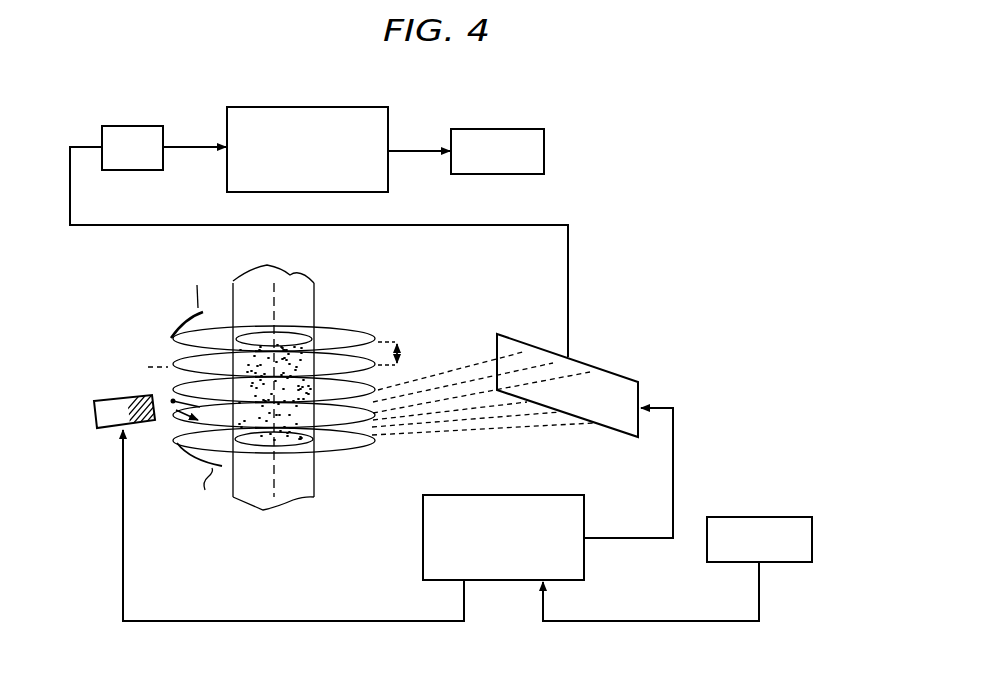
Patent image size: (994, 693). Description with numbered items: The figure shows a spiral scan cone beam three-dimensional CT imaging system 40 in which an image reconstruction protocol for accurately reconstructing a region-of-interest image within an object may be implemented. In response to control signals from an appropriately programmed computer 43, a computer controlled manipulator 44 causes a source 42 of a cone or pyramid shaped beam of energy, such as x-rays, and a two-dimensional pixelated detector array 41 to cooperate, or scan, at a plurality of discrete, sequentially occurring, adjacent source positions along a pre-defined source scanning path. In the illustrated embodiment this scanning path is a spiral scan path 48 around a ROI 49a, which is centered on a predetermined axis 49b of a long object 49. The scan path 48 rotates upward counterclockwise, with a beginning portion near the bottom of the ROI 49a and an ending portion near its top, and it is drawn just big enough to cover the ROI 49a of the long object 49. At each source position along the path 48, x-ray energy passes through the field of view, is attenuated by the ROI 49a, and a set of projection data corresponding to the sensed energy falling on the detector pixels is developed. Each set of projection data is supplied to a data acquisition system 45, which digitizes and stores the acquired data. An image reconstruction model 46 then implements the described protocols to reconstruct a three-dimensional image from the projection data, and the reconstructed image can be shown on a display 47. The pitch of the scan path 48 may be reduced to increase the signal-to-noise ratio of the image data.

The imaging system 40 is at (798, 194).
The detector array 41 is at (638, 381).
The source 42 is at (93, 419).
The computer 43 is at (813, 533).
The computer controlled manipulator 44 is at (577, 466).
The data acquisition system (DAS) 45 is at (137, 123).
The image reconstruction model 46 is at (340, 107).
The display 47 is at (538, 128).
The spiral scan path 48 is at (168, 353).
The long object 49 is at (314, 300).
The ROI 49a is at (307, 413).
The axis 49b is at (280, 290).